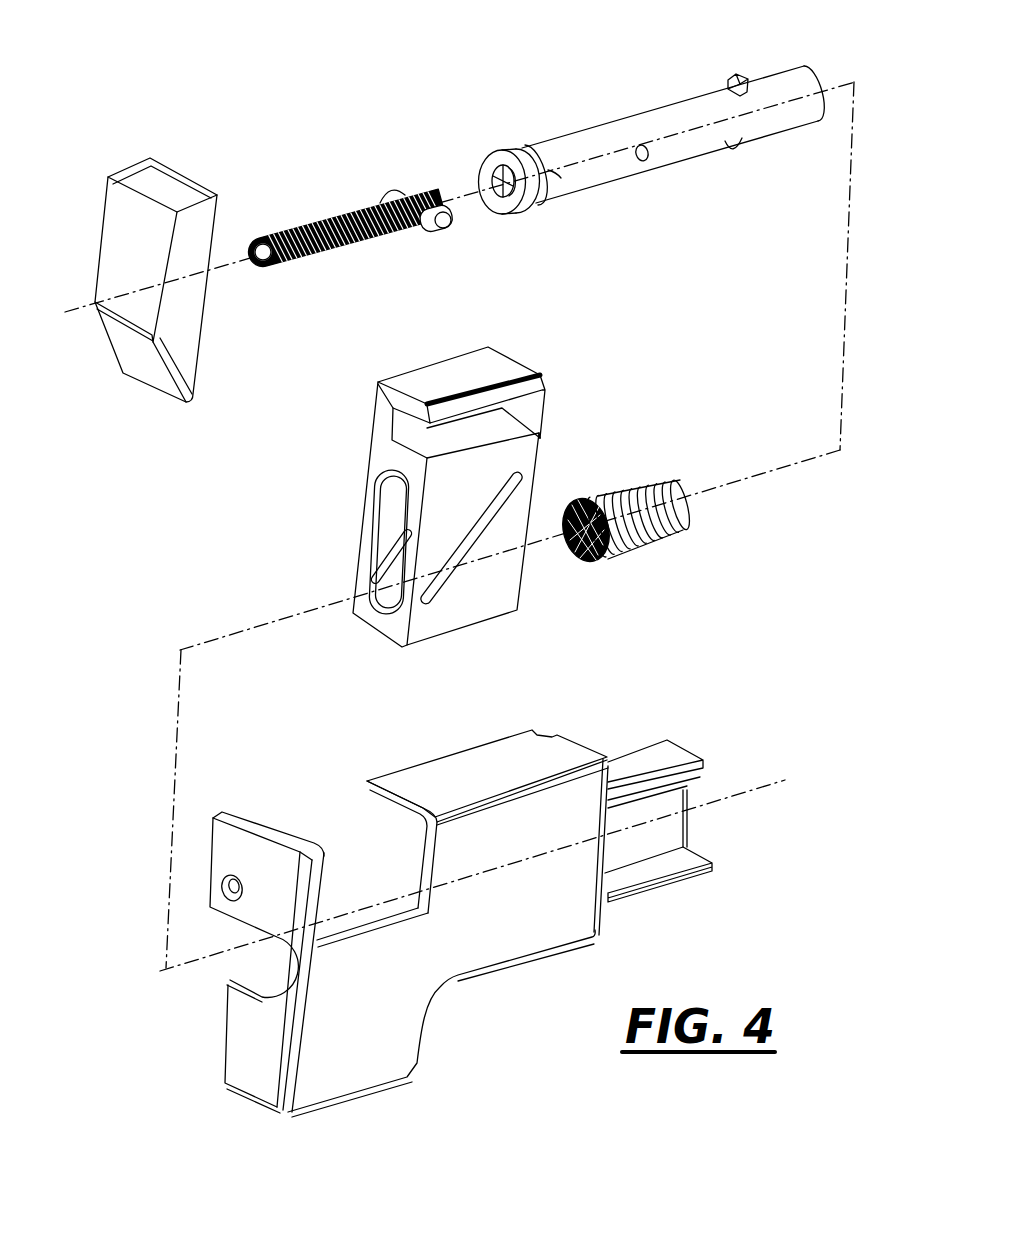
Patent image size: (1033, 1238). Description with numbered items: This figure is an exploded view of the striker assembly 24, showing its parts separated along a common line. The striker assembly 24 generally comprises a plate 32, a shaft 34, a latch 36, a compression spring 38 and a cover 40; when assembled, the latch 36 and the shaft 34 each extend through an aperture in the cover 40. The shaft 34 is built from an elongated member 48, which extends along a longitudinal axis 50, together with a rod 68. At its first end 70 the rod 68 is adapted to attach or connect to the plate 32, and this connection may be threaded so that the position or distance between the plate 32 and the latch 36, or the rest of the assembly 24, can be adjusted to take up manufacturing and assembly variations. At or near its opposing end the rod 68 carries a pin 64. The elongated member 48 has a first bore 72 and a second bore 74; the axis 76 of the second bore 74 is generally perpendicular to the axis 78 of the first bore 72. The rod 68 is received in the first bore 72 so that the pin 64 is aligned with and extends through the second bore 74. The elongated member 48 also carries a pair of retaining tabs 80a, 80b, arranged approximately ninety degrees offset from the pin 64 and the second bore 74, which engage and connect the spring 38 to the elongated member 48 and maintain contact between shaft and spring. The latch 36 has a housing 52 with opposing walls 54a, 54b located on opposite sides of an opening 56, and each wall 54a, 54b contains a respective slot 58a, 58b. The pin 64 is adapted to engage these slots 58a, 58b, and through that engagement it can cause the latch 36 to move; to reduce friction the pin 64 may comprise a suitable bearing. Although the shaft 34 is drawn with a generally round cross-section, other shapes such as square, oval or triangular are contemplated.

The striker assembly 24 is at (147, 68).
The plate 32 is at (190, 172).
The shaft 34 is at (439, 102).
The latch 36 is at (444, 501).
The compression spring 38 is at (662, 472).
The cover 40 is at (690, 731).
The elongated member 48 is at (673, 146).
The longitudinal axis 50 is at (241, 259).
The housing 52 is at (392, 458).
The wall 54a is at (488, 600).
The wall 54b is at (364, 503).
The opening 56 is at (378, 603).
The slot 58a is at (516, 487).
The slot 58b is at (383, 563).
The pin 64 is at (440, 231).
The rod 68 is at (369, 235).
The first end 70 is at (263, 266).
The first bore 72 is at (497, 181).
The second bore 74 is at (640, 148).
The axis 76 is at (676, 174).
The axis 78 is at (557, 170).
The retaining tab 80a is at (728, 82).
The retaining tab 80b is at (735, 153).